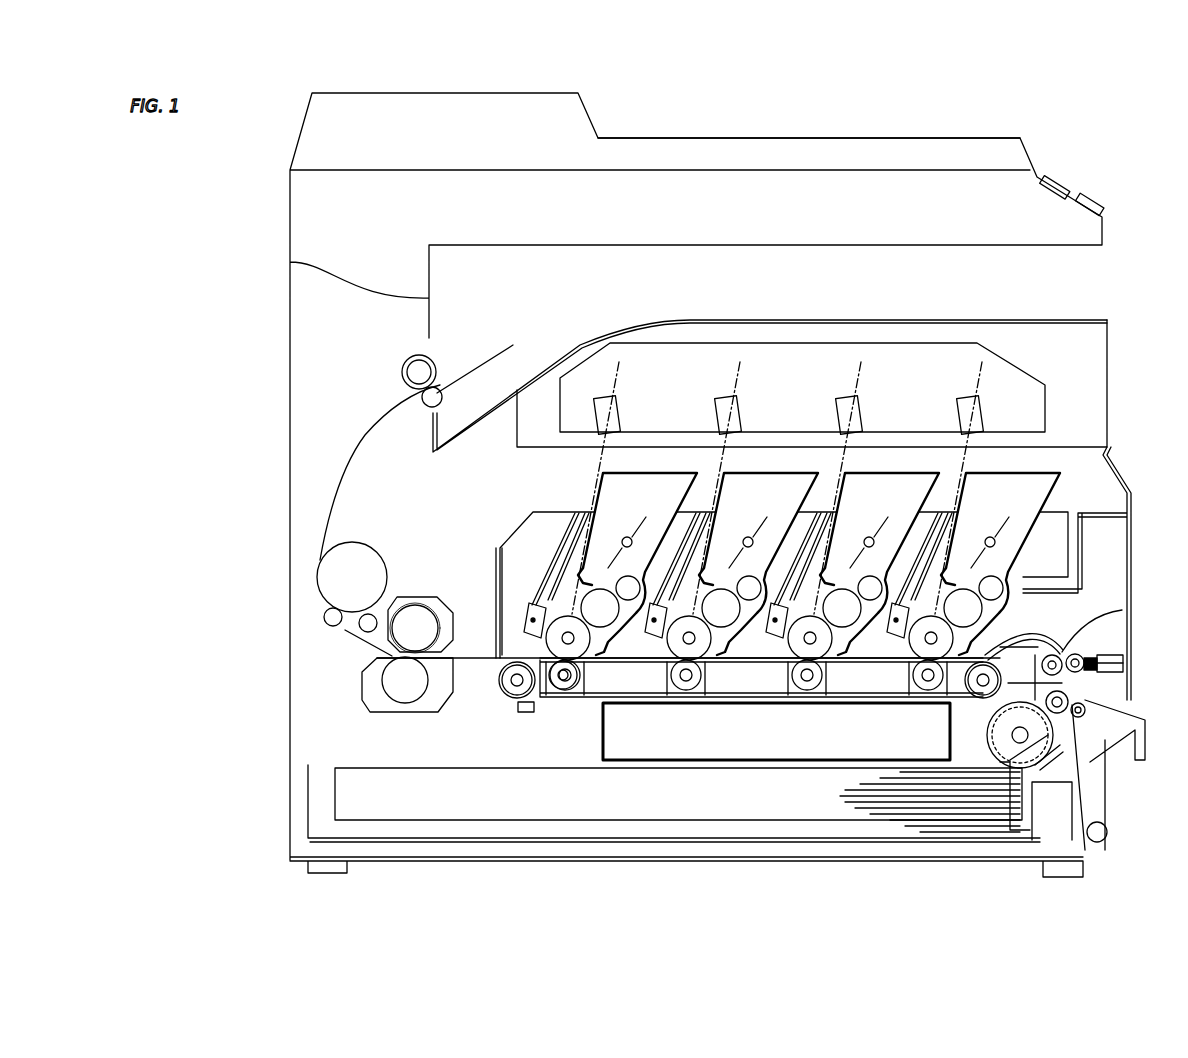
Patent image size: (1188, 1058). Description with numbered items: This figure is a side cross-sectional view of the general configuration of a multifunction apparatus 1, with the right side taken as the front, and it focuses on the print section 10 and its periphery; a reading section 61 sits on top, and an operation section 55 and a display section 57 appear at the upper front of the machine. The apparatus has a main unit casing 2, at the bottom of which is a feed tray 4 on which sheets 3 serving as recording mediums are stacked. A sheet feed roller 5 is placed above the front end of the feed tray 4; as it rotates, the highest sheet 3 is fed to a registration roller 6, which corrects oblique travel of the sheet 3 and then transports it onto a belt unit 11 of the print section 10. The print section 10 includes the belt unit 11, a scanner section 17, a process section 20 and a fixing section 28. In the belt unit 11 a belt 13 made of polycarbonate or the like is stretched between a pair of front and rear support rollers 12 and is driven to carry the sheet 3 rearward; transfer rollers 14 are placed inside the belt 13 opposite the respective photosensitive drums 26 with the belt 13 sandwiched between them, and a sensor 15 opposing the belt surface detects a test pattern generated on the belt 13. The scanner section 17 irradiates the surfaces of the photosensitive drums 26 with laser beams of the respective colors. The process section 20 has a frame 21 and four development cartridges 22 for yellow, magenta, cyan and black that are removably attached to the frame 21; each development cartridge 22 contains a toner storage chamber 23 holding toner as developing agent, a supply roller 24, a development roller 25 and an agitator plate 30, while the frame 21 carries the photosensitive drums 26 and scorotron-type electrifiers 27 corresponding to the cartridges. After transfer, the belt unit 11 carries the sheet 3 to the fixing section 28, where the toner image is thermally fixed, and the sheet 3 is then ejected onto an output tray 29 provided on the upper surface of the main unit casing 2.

The multifunction apparatus 1 is at (928, 114).
The main unit casing 2 is at (1103, 318).
The sheet 3 is at (805, 800).
The feed tray 4 is at (560, 845).
The sheet feed roller 5 is at (1021, 770).
The registration roller 6 is at (1122, 613).
The print section 10 is at (478, 496).
The belt unit 11 is at (592, 712).
The support rollers 12 is at (507, 699).
The belt 13 is at (560, 700).
The transfer rollers 14 is at (687, 691).
The sensor 15 is at (527, 714).
The scanner section 17 is at (818, 340).
The process section 20 is at (533, 500).
The frame 21 is at (497, 580).
The development cartridges 22 is at (665, 458).
The toner storage chamber 23 is at (750, 574).
The supply roller 24 is at (756, 543).
The development roller 25 is at (725, 625).
The photosensitive drums 26 is at (703, 650).
The electrifiers 27 is at (651, 628).
The fixing section 28 is at (416, 595).
The output tray 29 is at (588, 342).
The agitator plate 30 is at (632, 545).
The operation section 55 is at (1056, 178).
The display section 57 is at (1104, 197).
The reading section 61 is at (655, 136).